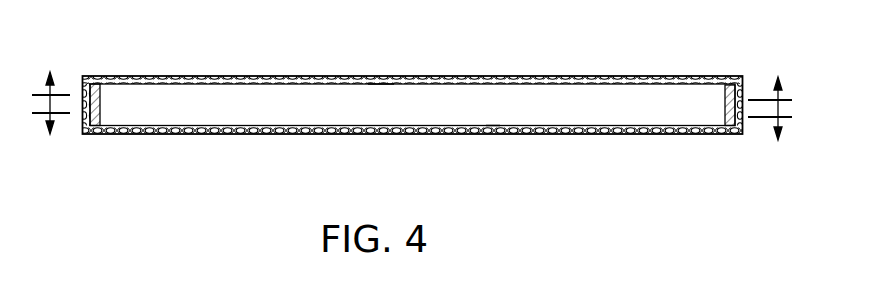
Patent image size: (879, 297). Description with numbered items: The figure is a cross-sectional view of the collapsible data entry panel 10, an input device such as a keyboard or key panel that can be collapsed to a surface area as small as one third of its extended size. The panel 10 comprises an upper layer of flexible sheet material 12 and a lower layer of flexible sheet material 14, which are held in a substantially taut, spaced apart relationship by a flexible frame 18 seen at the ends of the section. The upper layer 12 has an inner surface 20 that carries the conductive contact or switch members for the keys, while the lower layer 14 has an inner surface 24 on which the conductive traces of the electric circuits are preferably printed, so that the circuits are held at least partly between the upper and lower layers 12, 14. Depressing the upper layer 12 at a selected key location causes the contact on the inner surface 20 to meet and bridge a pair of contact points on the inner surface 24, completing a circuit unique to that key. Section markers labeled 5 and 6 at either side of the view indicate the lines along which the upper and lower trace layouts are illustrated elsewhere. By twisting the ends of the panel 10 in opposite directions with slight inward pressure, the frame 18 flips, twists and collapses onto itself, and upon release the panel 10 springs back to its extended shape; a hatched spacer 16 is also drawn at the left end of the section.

The collapsible data entry panel 10 is at (413, 109).
The upper layer of flexible sheet material 12 is at (186, 77).
The lower layer of flexible sheet material 14 is at (245, 134).
The left end spacer block 16 is at (95, 105).
The flexible frame 18 is at (725, 100).
The inner surface of the upper layer 20 is at (368, 82).
The inner surface of the lower layer 24 is at (499, 127).
The section line 5- 5 is at (412, 75).
The section line 6- 6 is at (412, 140).